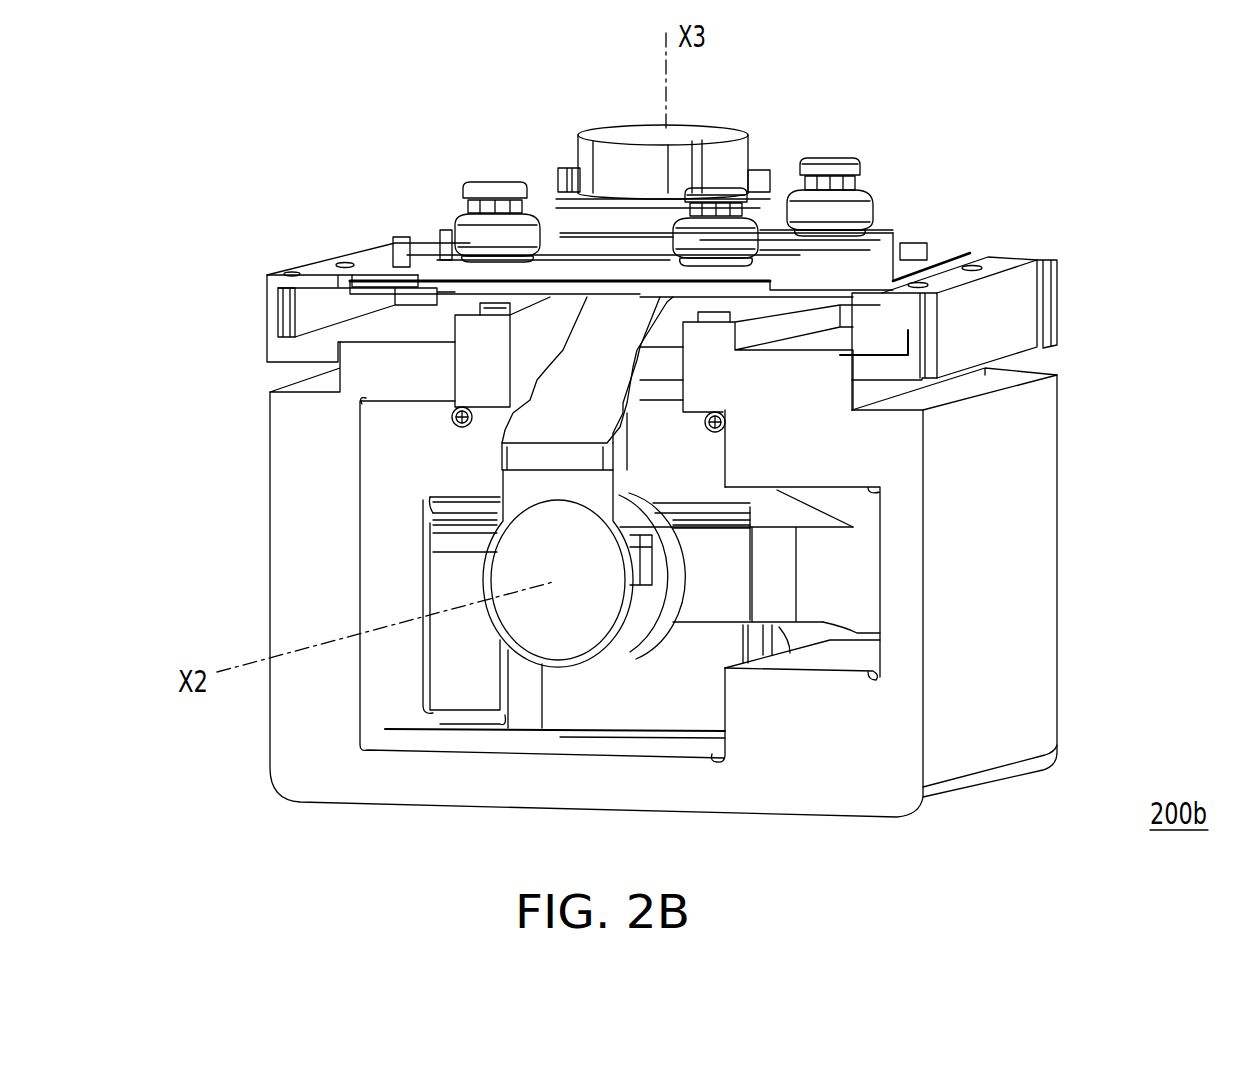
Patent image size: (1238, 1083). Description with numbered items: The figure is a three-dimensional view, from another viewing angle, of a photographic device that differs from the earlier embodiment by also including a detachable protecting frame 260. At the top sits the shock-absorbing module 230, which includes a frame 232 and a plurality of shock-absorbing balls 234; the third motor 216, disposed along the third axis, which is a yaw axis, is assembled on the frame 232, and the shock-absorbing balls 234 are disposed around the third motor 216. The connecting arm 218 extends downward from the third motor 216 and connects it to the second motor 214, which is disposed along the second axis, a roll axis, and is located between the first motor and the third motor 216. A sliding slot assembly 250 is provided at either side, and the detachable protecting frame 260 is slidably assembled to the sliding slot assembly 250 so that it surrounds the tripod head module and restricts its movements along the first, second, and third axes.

The second motor 214 is at (660, 625).
The third motor 216 is at (698, 130).
The connecting arm 218 is at (563, 383).
The shock-absorbing module 230 is at (1068, 155).
The frame 232 is at (945, 262).
The shock-absorbing balls 234 is at (862, 215).
The sliding slot assembly 250 is at (272, 305).
The detachable protecting frame 260 is at (1040, 562).